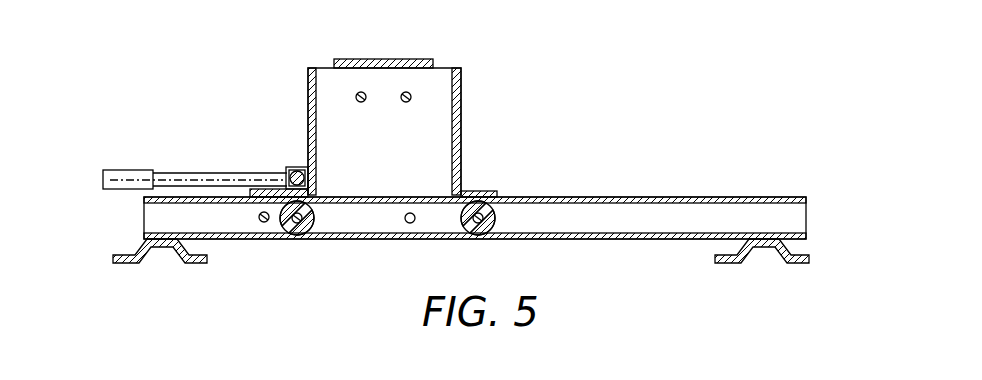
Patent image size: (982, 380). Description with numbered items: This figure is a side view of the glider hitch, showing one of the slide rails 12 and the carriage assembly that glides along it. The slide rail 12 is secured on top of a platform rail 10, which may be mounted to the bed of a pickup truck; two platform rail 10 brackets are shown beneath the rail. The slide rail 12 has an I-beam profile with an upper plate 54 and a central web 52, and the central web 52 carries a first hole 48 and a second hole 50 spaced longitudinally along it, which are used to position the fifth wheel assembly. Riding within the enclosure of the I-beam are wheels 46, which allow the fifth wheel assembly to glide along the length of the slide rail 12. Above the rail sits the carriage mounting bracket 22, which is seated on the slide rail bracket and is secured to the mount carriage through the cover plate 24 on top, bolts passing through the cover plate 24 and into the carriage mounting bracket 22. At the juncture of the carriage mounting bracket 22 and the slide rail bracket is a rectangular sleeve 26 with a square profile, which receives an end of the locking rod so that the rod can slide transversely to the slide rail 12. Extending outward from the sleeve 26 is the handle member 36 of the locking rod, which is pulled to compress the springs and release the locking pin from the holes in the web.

The platform rail 10 is at (196, 263).
The slide rail 12 is at (775, 197).
The carriage mounting bracket 22 is at (462, 128).
The cover plate 24 is at (384, 58).
The rectangular sleeve 26 is at (298, 167).
The handle member 36 is at (130, 170).
The wheel 46 is at (300, 236).
The first hole 48 is at (409, 224).
The second hole 50 is at (264, 224).
The central web 52 is at (800, 218).
The upper plate 54 is at (645, 197).